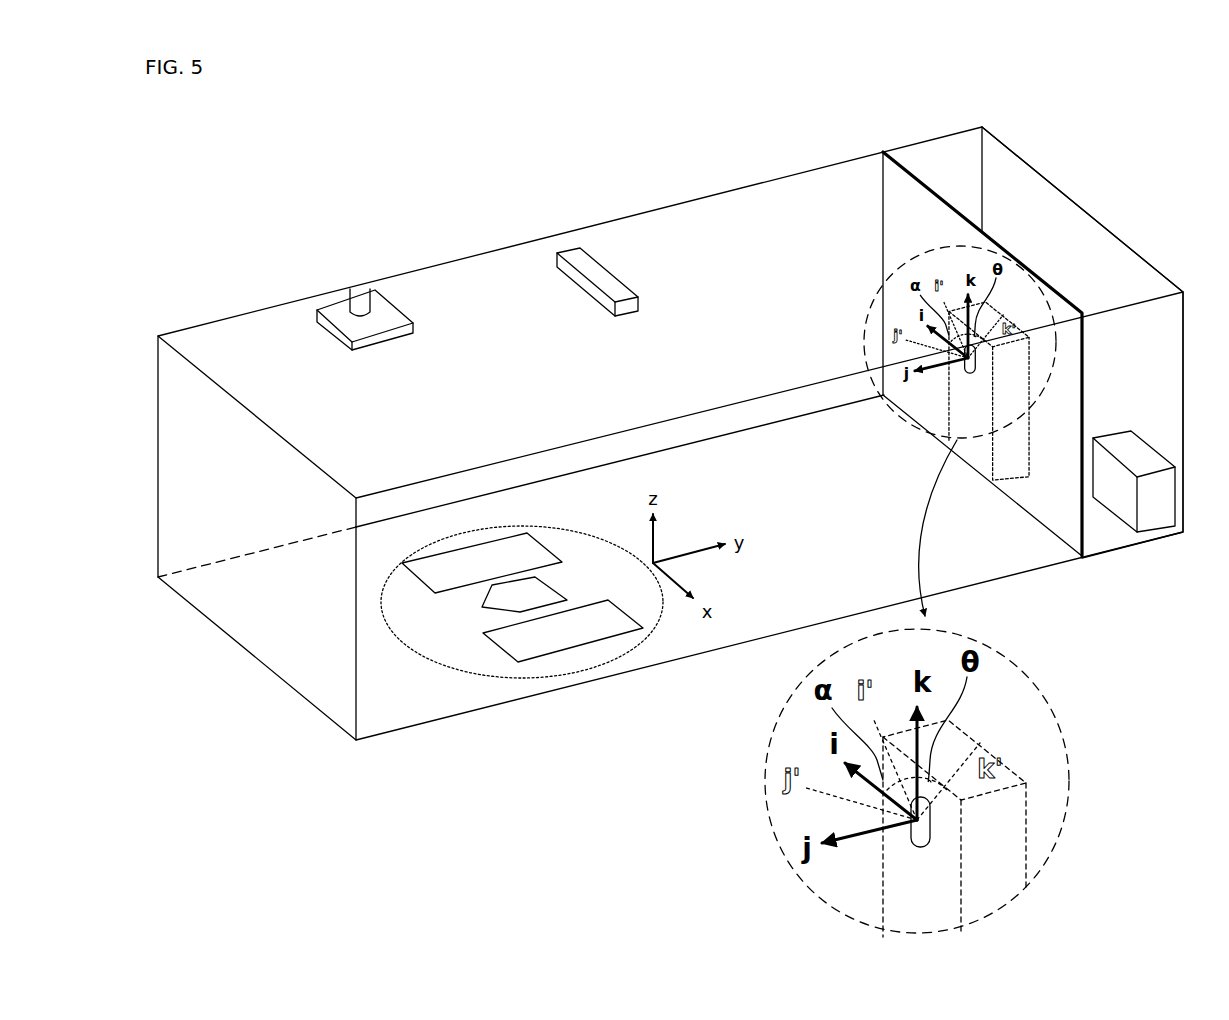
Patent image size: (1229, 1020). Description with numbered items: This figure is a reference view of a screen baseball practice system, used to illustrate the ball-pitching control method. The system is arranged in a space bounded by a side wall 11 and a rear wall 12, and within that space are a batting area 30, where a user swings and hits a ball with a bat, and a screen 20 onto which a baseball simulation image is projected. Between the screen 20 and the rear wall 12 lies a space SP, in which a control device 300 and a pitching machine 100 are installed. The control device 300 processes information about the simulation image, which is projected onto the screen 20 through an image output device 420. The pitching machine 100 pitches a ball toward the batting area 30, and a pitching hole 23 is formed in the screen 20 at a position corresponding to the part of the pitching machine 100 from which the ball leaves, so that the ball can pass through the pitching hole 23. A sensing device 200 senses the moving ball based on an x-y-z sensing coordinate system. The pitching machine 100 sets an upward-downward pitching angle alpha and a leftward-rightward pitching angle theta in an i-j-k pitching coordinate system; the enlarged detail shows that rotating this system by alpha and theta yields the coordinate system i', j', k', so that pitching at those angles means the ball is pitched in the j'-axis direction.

The side wall 11 is at (685, 201).
The rear wall 12 is at (1093, 218).
The screen 20 is at (958, 210).
The pitching hole 23 is at (937, 640).
The batting area 30 is at (522, 602).
The pitching machine 100 is at (942, 438).
The sensing device 200 is at (610, 272).
The control device 300 is at (1152, 513).
The image output device 420 is at (376, 337).
The space SP is at (1102, 338).